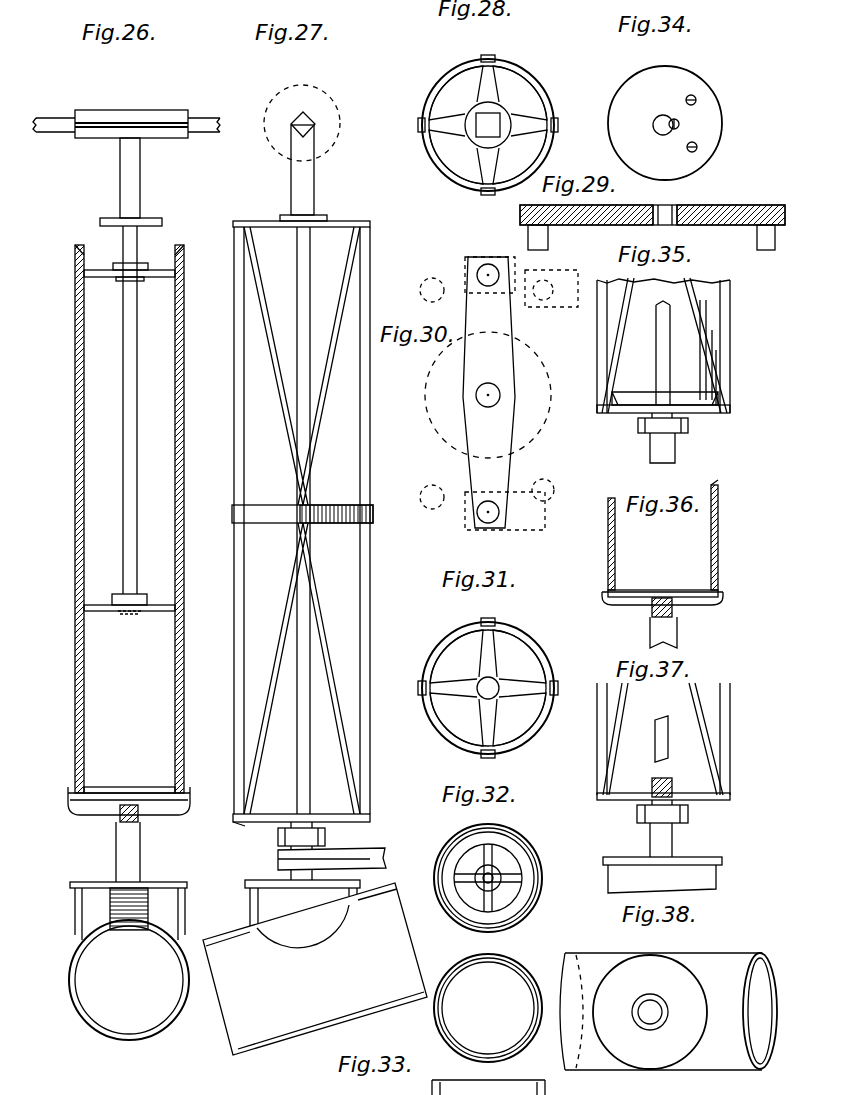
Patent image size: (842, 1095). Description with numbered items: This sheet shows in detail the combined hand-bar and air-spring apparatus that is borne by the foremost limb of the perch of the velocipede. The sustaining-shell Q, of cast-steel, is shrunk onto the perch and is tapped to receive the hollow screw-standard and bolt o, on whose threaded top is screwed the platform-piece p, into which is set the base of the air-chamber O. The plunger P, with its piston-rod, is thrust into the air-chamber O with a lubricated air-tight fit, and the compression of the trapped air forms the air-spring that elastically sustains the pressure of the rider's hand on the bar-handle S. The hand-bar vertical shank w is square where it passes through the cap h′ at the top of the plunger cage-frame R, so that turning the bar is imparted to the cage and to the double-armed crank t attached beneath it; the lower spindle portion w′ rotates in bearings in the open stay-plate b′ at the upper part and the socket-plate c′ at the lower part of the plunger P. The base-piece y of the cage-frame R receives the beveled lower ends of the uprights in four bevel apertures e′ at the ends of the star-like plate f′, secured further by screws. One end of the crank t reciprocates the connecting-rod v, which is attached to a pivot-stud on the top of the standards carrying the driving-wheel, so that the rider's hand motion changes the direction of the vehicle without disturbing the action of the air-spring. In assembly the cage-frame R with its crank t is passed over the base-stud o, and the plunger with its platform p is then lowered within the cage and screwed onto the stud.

In FIG. 26, the bar-handle S is at (155, 117).
In FIG. 27, the bar-handle S is at (313, 122).
In FIG. 26, the hand-bar vertical shank w is at (136, 181).
In FIG. 27, the hand-bar vertical shank w is at (306, 188).
In FIG. 26, the cap h′ is at (100, 222).
In FIG. 27, the cap h′ is at (348, 217).
In FIG. 28, the cap h′ is at (527, 75).
In FIG. 26, the spindle portion of the hand-bar shank w′ is at (120, 410).
In FIG. 26, the open stay-plate b′ is at (104, 278).
In FIG. 32, the open stay-plate b′ is at (520, 878).
In FIG. 26, the plunger P is at (86, 586).
In FIG. 32, the plunger P is at (470, 1002).
In FIG. 26, the socket-plate c′ is at (148, 601).
In FIG. 26, the air-chamber O is at (129, 750).
In FIG. 35, the air-chamber O is at (663, 345).
In FIG. 36, the air-chamber O is at (663, 538).
In FIG. 26, the platform-piece p is at (160, 816).
In FIG. 35, the platform-piece p is at (683, 392).
In FIG. 36, the platform-piece p is at (713, 596).
In FIG. 26, the hollow screw-standard and bolt o is at (117, 858).
In FIG. 35, the hollow screw-standard and bolt o is at (650, 458).
In FIG. 36, the hollow screw-standard and bolt o is at (679, 633).
In FIG. 37, the hollow screw-standard and bolt o is at (670, 840).
In FIG. 38, the hollow screw-standard and bolt o is at (656, 1018).
In FIG. 26, the sustaining-shell Q is at (120, 961).
In FIG. 27, the sustaining-shell Q is at (315, 967).
In FIG. 37, the sustaining-shell Q is at (700, 877).
In FIG. 38, the sustaining-shell Q is at (668, 1011).
In FIG. 27, the plunger cage-frame R is at (364, 558).
In FIG. 27, the double-armed crank t is at (278, 838).
In FIG. 29, the double-armed crank t is at (745, 210).
In FIG. 35, the double-armed crank t is at (640, 428).
In FIG. 37, the double-armed crank t is at (688, 817).
In FIG. 30, the double-armed crank t is at (478, 361).
In FIG. 27, the connecting-rod v is at (332, 863).
In FIG. 30, the connecting-rod v is at (509, 504).
In FIG. 27, the base-piece y is at (352, 823).
In FIG. 31, the base-piece y is at (548, 657).
In FIG. 31, the bevel apertures e′ is at (492, 618).
In FIG. 31, the star-like plate f′ is at (531, 690).